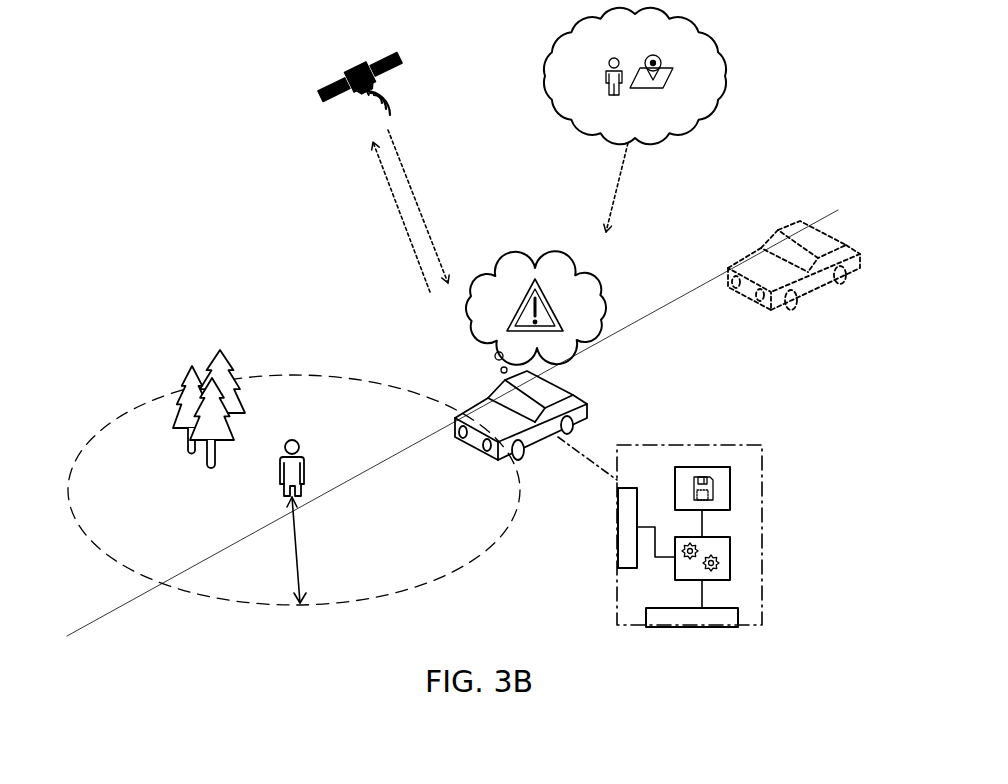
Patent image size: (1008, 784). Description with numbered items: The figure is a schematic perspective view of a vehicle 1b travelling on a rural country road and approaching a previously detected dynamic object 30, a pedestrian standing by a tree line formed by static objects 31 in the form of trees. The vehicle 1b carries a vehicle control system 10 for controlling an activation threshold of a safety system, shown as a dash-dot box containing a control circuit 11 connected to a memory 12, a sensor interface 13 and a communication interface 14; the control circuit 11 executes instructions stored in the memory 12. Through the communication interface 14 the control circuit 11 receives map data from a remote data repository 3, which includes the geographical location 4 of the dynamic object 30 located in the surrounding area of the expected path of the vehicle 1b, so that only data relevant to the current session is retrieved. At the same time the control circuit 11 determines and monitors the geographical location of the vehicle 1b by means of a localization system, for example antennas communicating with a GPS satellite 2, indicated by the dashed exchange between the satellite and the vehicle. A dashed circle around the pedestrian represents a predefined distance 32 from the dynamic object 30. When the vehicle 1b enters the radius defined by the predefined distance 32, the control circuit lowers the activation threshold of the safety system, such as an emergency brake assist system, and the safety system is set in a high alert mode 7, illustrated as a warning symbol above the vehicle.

The vehicle 1b is at (587, 404).
The GPS satellite 2 is at (322, 100).
The remote data repository 3 is at (726, 72).
The geographical location of the dynamic object 4 is at (575, 92).
The high alert mode 7 is at (512, 268).
The vehicle control system 10 is at (762, 597).
The control circuit 11 is at (730, 537).
The memory 12 is at (732, 472).
The sensor interface 13 is at (738, 628).
The communication interface 14 is at (622, 570).
The dynamic object 30 is at (293, 440).
The static objects 31 is at (220, 350).
The predefined distance 32 is at (297, 560).